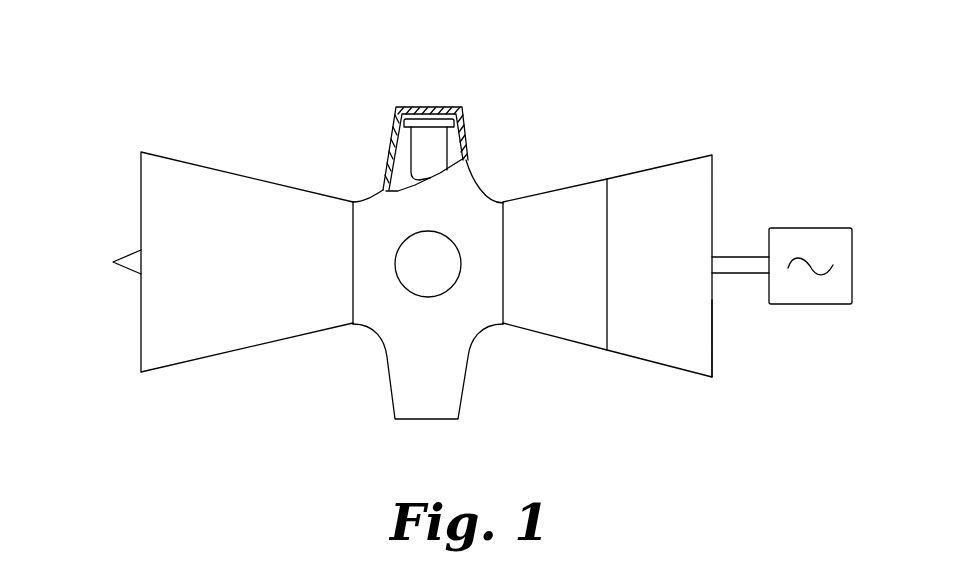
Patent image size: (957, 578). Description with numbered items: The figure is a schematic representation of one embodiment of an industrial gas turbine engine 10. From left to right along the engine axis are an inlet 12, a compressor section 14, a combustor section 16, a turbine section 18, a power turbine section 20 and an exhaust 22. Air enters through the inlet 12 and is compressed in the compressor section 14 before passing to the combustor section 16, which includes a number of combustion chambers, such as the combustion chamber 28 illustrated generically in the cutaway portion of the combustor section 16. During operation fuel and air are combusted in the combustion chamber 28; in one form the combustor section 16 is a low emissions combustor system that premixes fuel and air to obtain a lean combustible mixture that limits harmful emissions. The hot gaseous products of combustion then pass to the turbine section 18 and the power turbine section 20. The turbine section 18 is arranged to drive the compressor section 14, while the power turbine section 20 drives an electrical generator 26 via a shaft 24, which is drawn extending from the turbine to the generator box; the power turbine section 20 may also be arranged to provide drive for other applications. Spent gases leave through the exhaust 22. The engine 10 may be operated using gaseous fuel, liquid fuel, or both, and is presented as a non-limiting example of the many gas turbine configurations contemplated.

The industrial gas turbine engine 10 is at (600, 95).
The inlet 12 is at (140, 187).
The compressor section 14 is at (204, 196).
The combustor section 16 is at (421, 98).
The turbine section 18 is at (550, 207).
The power turbine section 20 is at (670, 188).
The exhaust 22 is at (714, 343).
The shaft 24 is at (748, 258).
The electrical generator 26 is at (819, 237).
The combustion chamber 28 is at (433, 147).